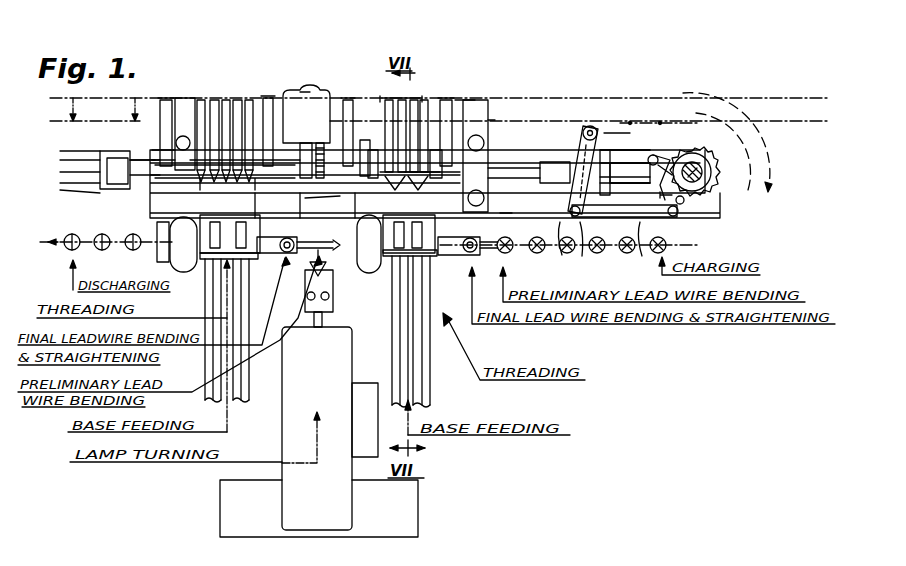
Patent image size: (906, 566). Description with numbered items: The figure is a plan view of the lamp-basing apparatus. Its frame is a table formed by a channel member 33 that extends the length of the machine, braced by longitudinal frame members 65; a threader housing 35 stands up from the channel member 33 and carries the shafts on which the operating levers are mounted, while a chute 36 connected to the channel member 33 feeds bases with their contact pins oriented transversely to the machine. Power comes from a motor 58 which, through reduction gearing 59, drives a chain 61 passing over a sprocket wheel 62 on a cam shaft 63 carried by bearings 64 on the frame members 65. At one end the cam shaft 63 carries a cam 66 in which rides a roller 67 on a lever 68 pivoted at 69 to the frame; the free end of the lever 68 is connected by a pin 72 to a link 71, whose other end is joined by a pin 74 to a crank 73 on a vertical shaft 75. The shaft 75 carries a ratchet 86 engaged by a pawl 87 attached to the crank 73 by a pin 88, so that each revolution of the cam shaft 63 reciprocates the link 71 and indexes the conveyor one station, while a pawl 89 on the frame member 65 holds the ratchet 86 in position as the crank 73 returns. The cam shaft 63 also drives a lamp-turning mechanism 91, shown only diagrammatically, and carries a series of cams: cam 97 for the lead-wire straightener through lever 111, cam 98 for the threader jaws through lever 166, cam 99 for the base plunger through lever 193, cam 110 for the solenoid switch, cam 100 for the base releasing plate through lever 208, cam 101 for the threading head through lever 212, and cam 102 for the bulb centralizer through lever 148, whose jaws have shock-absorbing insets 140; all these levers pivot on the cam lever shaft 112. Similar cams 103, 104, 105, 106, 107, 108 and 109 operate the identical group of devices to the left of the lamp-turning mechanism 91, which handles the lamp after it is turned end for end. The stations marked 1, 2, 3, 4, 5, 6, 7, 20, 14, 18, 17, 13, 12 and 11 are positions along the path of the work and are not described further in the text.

The charging station 1 is at (658, 239).
The preliminary lead wire bending station 2 is at (627, 239).
The final lead wire bending station 3 is at (597, 239).
The station 4 is at (567, 239).
The threading station 5 is at (537, 239).
The base feeding station 6 is at (505, 239).
The lamp turning station 7 is at (468, 228).
The frame member 11 is at (351, 206).
The lamp gripper 12 is at (318, 238).
The clamping nut 13 is at (288, 237).
The station 14 is at (102, 236).
The station mechanism 17 is at (176, 240).
The station 18 is at (133, 236).
The discharging station 20 is at (71, 236).
The channel member 33 is at (512, 210).
The threader housing 35 is at (200, 283).
The chute 36 is at (246, 378).
The motor 58 is at (280, 92).
The reduction gearing 59 is at (277, 205).
The chain 61 is at (322, 132).
The sprocket wheel 62 is at (332, 185).
The cam shaft 63 is at (498, 162).
The bearings 64 is at (104, 196).
The longitudinal frame members 65 is at (72, 184).
The cam 66 is at (633, 160).
The roller 67 is at (586, 124).
The lever 68 is at (604, 150).
The pivot 69 is at (628, 130).
The link 71 is at (639, 252).
The pin 72 is at (569, 251).
The crank 73 is at (712, 185).
The pin 74 is at (690, 208).
The vertical shaft 75 is at (688, 124).
The ratchet 86 is at (727, 140).
The pawl 87 is at (596, 252).
The pin 88 is at (704, 198).
The pawl 89 is at (658, 126).
The lamp-turning mechanism 91 is at (283, 422).
The cam 97 is at (458, 126).
The cam 98 is at (448, 140).
The cam 99 is at (424, 128).
The cam 100 is at (414, 125).
The cam 101 is at (388, 145).
The cam 102 is at (348, 130).
The cam 103 is at (258, 130).
The cam 104 is at (236, 126).
The cam 105 is at (215, 128).
The cam 106 is at (178, 128).
The cam 107 is at (201, 122).
The cam 108 is at (178, 100).
The cam 109 is at (168, 143).
The cam 110 is at (364, 142).
The lever 111 is at (466, 150).
The cam lever shaft 112 is at (488, 116).
The shock-absorbing insets 140 is at (500, 126).
The lever 148 is at (372, 150).
The lever 166 is at (438, 140).
The lever 193 is at (430, 135).
The lever 208 is at (402, 150).
The lever 212 is at (398, 130).